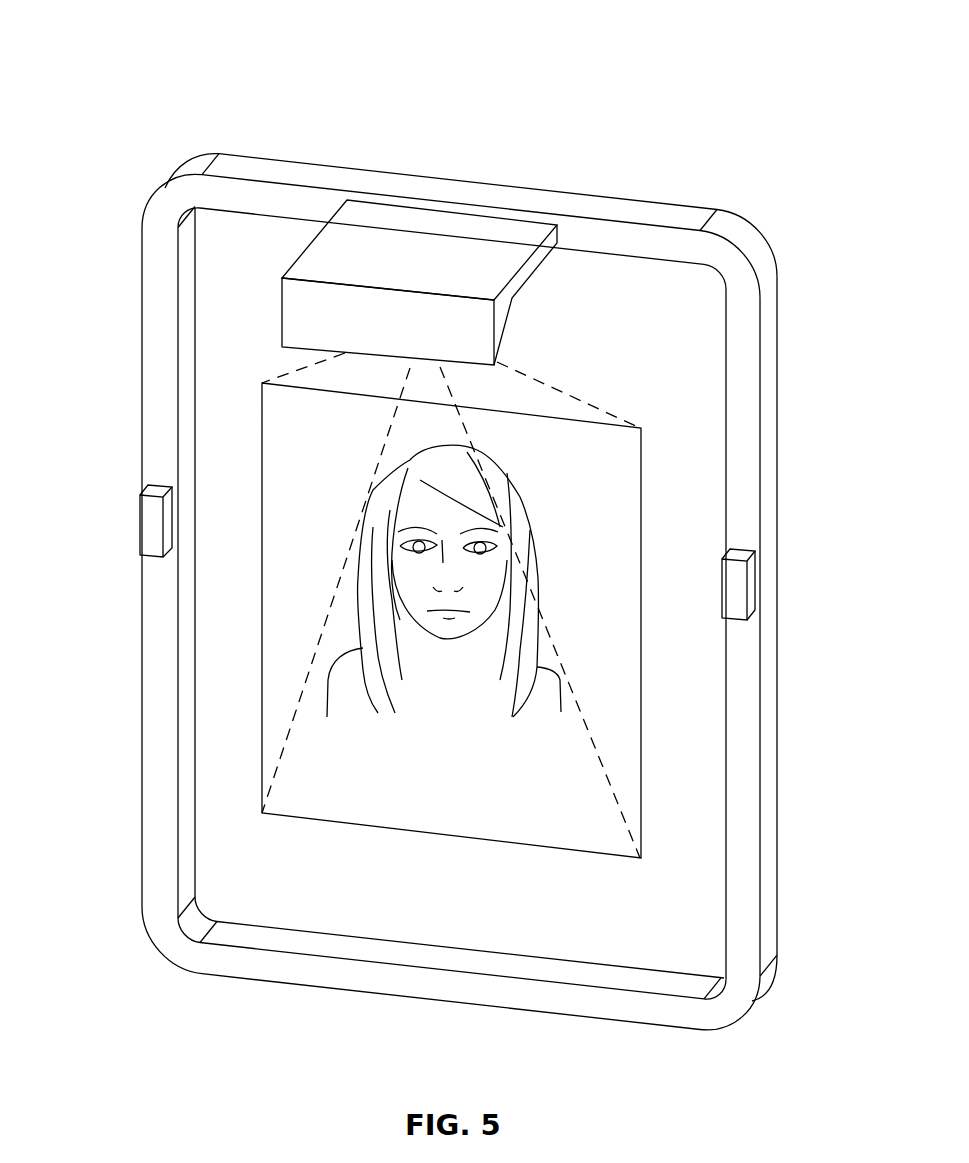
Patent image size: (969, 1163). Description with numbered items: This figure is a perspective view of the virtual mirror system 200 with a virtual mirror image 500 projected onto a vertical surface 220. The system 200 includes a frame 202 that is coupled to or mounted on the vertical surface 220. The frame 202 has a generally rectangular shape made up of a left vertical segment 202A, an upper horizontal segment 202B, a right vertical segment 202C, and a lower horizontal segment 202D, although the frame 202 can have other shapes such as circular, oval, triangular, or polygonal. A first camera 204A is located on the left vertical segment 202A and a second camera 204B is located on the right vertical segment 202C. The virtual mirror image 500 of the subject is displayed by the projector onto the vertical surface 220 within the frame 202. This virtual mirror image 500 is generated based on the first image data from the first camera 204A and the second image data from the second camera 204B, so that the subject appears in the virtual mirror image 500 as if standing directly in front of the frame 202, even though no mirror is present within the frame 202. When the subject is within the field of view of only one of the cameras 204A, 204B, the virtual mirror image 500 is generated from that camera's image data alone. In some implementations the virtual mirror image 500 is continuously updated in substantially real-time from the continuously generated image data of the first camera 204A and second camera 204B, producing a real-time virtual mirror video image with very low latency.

The virtual mirror system 200 is at (717, 38).
The frame 202 is at (755, 197).
The left vertical segment 202A is at (157, 618).
The upper horizontal segment 202B is at (298, 197).
The right vertical segment 202C is at (745, 645).
The lower horizontal segment 202D is at (343, 980).
The first camera 204A is at (150, 512).
The second camera 204B is at (750, 588).
The vertical surface 220 is at (110, 870).
The virtual mirror image 500 is at (642, 482).